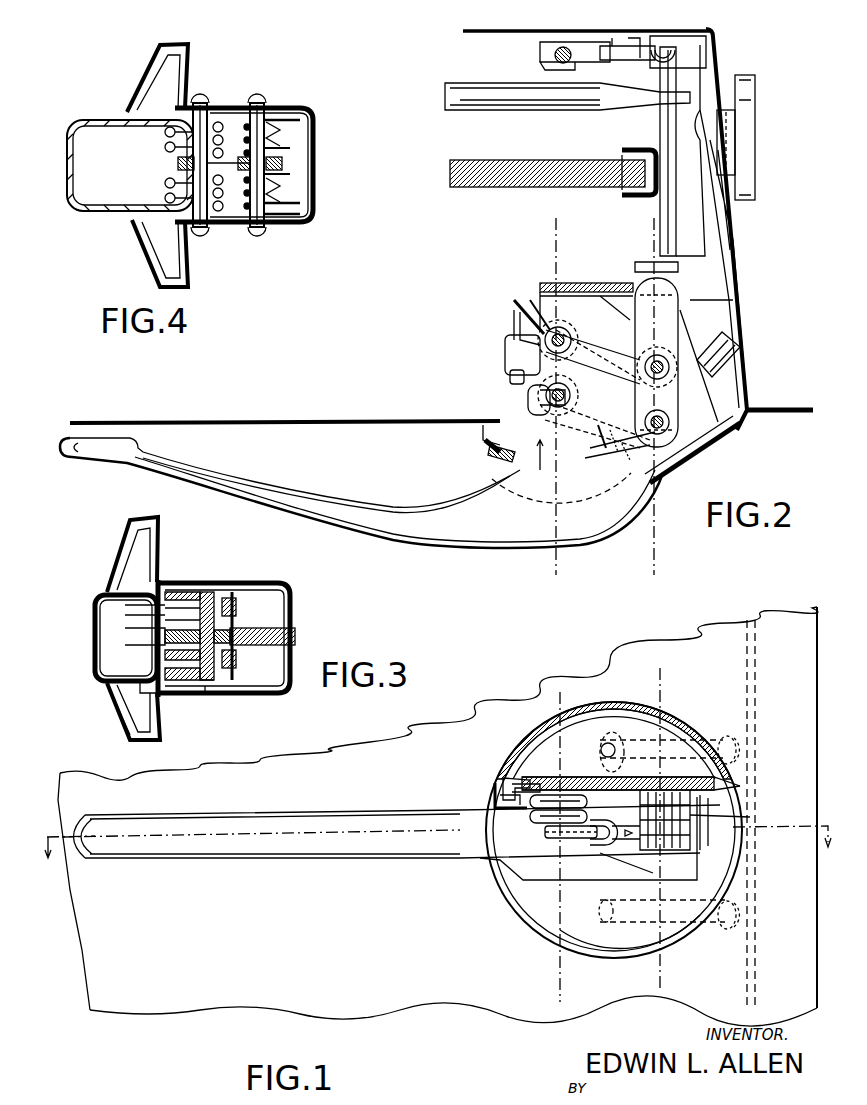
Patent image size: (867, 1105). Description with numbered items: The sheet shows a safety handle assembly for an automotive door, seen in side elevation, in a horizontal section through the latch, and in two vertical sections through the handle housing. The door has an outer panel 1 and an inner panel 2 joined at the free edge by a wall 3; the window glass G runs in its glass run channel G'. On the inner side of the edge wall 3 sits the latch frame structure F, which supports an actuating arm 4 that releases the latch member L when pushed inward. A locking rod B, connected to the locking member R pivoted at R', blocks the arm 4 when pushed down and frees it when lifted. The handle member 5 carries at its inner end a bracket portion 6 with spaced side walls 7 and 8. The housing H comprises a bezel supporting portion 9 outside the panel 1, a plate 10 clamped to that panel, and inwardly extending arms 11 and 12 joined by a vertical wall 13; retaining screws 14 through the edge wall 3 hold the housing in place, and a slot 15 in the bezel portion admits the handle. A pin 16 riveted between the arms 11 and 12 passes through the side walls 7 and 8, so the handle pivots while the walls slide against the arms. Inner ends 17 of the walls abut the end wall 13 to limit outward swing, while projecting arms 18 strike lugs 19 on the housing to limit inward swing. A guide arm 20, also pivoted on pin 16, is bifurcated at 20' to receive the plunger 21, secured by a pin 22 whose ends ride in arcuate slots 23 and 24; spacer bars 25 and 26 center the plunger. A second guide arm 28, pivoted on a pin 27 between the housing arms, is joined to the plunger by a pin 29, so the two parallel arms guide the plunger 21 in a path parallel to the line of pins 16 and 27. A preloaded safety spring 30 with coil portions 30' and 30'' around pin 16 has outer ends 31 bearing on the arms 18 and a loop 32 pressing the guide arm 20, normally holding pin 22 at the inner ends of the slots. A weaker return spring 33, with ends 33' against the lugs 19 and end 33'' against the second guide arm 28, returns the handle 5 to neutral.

In FIG. 2, the outer panel 1 is at (118, 425).
In FIG. 1, the outer panel 1 is at (438, 816).
In FIG. 2, the inner panel 2 is at (470, 32).
In FIG. 1, the inner panel 2 is at (437, 862).
In FIG. 2, the wall 3 is at (731, 258).
In FIG. 1, the wall 3 is at (660, 668).
In FIG. 2, the arm 4 is at (682, 265).
In FIG. 1, the arm 4 is at (560, 692).
In FIG. 2, the handle member 5 is at (390, 512).
In FIG. 1, the handle member 5 is at (314, 822).
In FIG. 2, the bracket portion 6 is at (542, 462).
In FIG. 4, the side wall 7 is at (232, 110).
In FIG. 3, the side wall 7 is at (182, 592).
In FIG. 1, the side wall 7 is at (590, 778).
In FIG. 4, the side wall 8 is at (245, 228).
In FIG. 3, the side wall 8 is at (206, 686).
In FIG. 4, the bezel supporting portion 9 is at (158, 66).
In FIG. 2, the bezel supporting portion 9 is at (484, 446).
In FIG. 3, the bezel supporting portion 9 is at (126, 536).
In FIG. 4, the plate 10 is at (182, 80).
In FIG. 3, the plate 10 is at (170, 560).
In FIG. 4, the arm 11 is at (305, 108).
In FIG. 3, the arm 11 is at (262, 590).
In FIG. 4, the arm 12 is at (296, 222).
In FIG. 2, the arm 12 is at (602, 283).
In FIG. 3, the arm 12 is at (246, 692).
In FIG. 4, the vertical wall 13 is at (313, 124).
In FIG. 2, the vertical wall 13 is at (566, 283).
In FIG. 2, the retaining screws 14 is at (742, 362).
In FIG. 1, the retaining screws 14 is at (722, 742).
In FIG. 4, the slot 15 is at (120, 118).
In FIG. 2, the slot 15 is at (510, 456).
In FIG. 1, the slot 15 is at (592, 882).
In FIG. 4, the pin 16 is at (178, 163).
In FIG. 2, the pin 16 is at (540, 396).
In FIG. 1, the pin 16 is at (512, 786).
In FIG. 2, the inner ends 17 is at (696, 340).
In FIG. 2, the projecting arms 18 is at (506, 342).
In FIG. 1, the projecting arms 18 is at (520, 770).
In FIG. 4, the lugs 19 is at (265, 90).
In FIG. 2, the lugs 19 is at (512, 312).
In FIG. 4, the guide arm 20 is at (178, 159).
In FIG. 2, the guide arm 20 is at (594, 416).
In FIG. 1, the guide arm 20 is at (572, 857).
In FIG. 3, the bifurcated end portions 20' is at (141, 637).
In FIG. 1, the bifurcated end portions 20' is at (739, 822).
In FIG. 2, the plunger 21 is at (680, 294).
In FIG. 3, the plunger 21 is at (290, 630).
In FIG. 1, the plunger 21 is at (670, 852).
In FIG. 2, the pin 22 is at (710, 452).
In FIG. 3, the pin 22 is at (150, 690).
In FIG. 3, the arcuate slot 23 is at (118, 590).
In FIG. 2, the arcuate slot 24 is at (630, 470).
In FIG. 3, the arcuate slot 24 is at (118, 700).
In FIG. 3, the spacer bar 25 is at (238, 668).
In FIG. 3, the spacer bar 26 is at (238, 606).
In FIG. 4, the pin 27 is at (288, 148).
In FIG. 2, the pin 27 is at (574, 330).
In FIG. 4, the second guide arm 28 is at (288, 174).
In FIG. 2, the second guide arm 28 is at (626, 330).
In FIG. 3, the second guide arm 28 is at (238, 650).
In FIG. 2, the pin 29 is at (672, 372).
In FIG. 3, the pin 29 is at (222, 592).
In FIG. 2, the safety spring 30 is at (504, 400).
In FIG. 4, the coil portion 30' is at (148, 136).
In FIG. 1, the coil portion 30' is at (517, 800).
In FIG. 4, the coil portion 30'' is at (148, 190).
In FIG. 2, the outer end portions 31 is at (512, 376).
In FIG. 1, the outer end portions 31 is at (520, 770).
In FIG. 2, the loop 32 is at (605, 446).
In FIG. 1, the loop 32 is at (604, 818).
In FIG. 4, the return spring 33 is at (305, 199).
In FIG. 2, the return spring 33 is at (530, 295).
In FIG. 4, the end portions 33' is at (308, 146).
In FIG. 2, the end portions 33' is at (507, 297).
In FIG. 2, the end portion 33'' is at (620, 289).
In FIG. 2, the locking rod B is at (568, 50).
In FIG. 2, the locking member R is at (627, 30).
In FIG. 2, the pivotal support R' is at (678, 34).
In FIG. 2, the frame structure F is at (672, 120).
In FIG. 2, the window glass G is at (547, 159).
In FIG. 2, the glass run channel G' is at (626, 163).
In FIG. 2, the latch member L is at (755, 118).
In FIG. 4, the housing H is at (280, 106).
In FIG. 3, the housing H is at (286, 586).